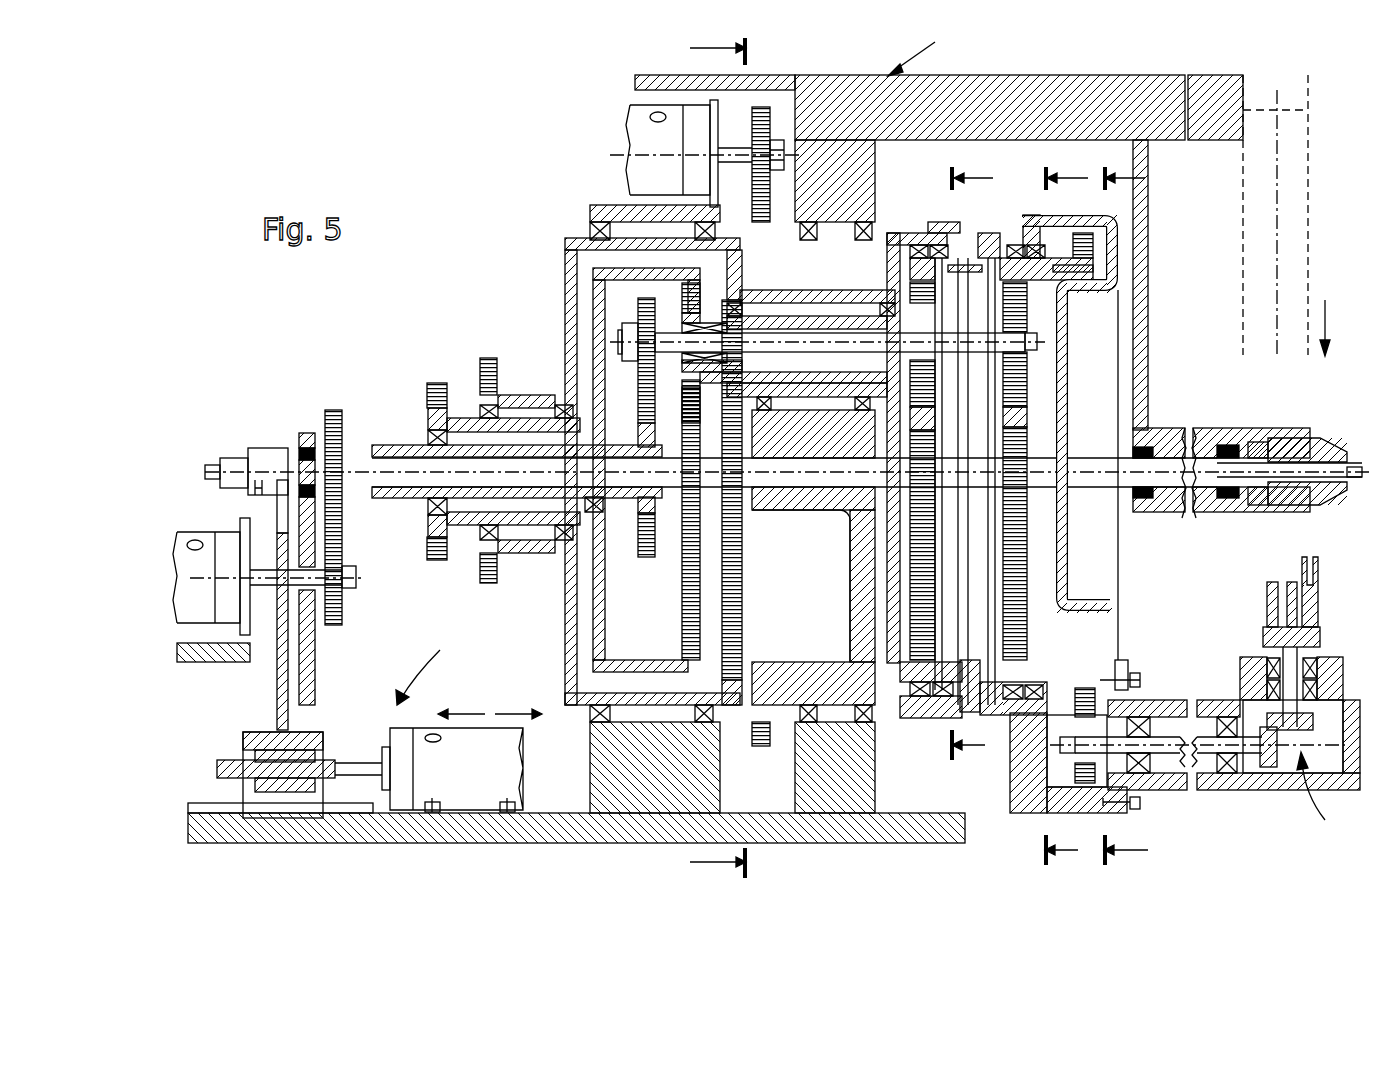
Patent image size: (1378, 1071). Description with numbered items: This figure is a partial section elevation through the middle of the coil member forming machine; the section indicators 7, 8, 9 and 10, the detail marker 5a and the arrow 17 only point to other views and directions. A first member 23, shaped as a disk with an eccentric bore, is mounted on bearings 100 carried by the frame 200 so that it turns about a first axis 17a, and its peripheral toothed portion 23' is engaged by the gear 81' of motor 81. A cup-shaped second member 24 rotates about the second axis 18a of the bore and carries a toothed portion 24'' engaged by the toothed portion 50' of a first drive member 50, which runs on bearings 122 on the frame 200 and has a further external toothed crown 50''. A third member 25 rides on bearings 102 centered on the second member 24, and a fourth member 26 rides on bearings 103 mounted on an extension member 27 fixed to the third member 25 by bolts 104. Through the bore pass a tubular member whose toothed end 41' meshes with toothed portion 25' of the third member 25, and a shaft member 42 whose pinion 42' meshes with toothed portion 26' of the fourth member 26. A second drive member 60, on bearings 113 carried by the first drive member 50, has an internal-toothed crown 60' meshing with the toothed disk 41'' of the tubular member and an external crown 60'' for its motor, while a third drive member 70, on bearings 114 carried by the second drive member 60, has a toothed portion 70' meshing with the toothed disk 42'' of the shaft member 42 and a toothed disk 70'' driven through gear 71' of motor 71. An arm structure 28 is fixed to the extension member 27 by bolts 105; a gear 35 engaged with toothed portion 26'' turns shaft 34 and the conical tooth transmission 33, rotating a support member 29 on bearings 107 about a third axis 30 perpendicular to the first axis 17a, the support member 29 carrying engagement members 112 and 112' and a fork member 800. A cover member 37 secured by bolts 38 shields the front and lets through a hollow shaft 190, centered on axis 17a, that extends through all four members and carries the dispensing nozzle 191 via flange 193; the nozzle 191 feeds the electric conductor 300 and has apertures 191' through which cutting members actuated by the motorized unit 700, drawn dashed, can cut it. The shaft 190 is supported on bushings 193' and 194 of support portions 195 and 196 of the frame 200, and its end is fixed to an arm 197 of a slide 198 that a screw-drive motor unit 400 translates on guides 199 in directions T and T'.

The section line 7- 7 is at (695, 48).
The section line 8- 8 is at (980, 178).
The section line 9- 9 is at (1075, 178).
The section line 10- 10 is at (1145, 178).
The drive assembly 5a is at (926, 56).
The frame 200 is at (1050, 92).
The motorized unit 700 is at (1243, 205).
The direction of cutting 17 is at (1330, 315).
The bearings 100 is at (876, 232).
The support portion 195 is at (1150, 280).
The motor 81 is at (690, 153).
The gear 81' is at (753, 156).
The bearings 122 is at (595, 215).
The first drive member 50 is at (630, 471).
The toothed portion 50' is at (756, 502).
The second drive member 60 is at (646, 470).
The toothed portion 60' is at (667, 520).
The toothed portion 42'' is at (630, 352).
The toothed portion 70' is at (629, 468).
The toothed portion 41'' is at (674, 352).
The shaft member 42 is at (827, 352).
The second axis 18a is at (1040, 345).
The toothed portion 24'' is at (788, 303).
The first member 23 is at (813, 557).
The toothed portion 23' is at (762, 754).
The third drive member 70 is at (514, 496).
The shaft 190 is at (1095, 490).
The bushing 194 is at (299, 450).
The support portion 196 is at (315, 665).
The arm 197 is at (277, 682).
The toothed portion 70'' is at (328, 494).
The motor 71 is at (267, 575).
The gear 71' is at (370, 604).
The bearings 114 is at (430, 432).
The bearings 113 is at (483, 405).
The toothed portion 50'' is at (493, 445).
The toothed portion 60'' is at (420, 442).
The second member 24 is at (923, 429).
The bolts 104 is at (962, 265).
The bearings 103 is at (1005, 240).
The toothed portion 26'' is at (1075, 223).
The end 41' is at (938, 356).
The fourth member 26 is at (1028, 307).
The toothed pinion 42' is at (1029, 397).
The toothed portion 25' is at (952, 481).
The toothed portion 26' is at (1030, 543).
The third member 25 is at (924, 709).
The bearings 102 is at (960, 700).
The extension member 27 is at (1018, 812).
The gear 35 is at (1085, 768).
The shaft 34 is at (1167, 737).
The arm structure 28 is at (1262, 790).
The third axis 30 is at (1292, 748).
The support member 29 is at (1263, 640).
The conical tooth transmission 33 is at (1323, 793).
The engagement member 112 is at (1252, 604).
The engagement member 112' is at (1247, 580).
The fork member 800 is at (1318, 568).
The bearings 107 is at (1312, 660).
The bolts 38 is at (1135, 672).
The bolts 105 is at (1140, 803).
The cover member 37 is at (1068, 585).
The first axis 17a is at (1155, 512).
The bushing 193' is at (1230, 449).
The flange 193 is at (1231, 522).
The apertures 191' is at (1273, 499).
The dispensing nozzle 191 is at (1311, 450).
The electric conductor 300 is at (1350, 490).
The slide 198 is at (243, 736).
The guides 199 is at (212, 803).
The motor unit 400 is at (462, 723).